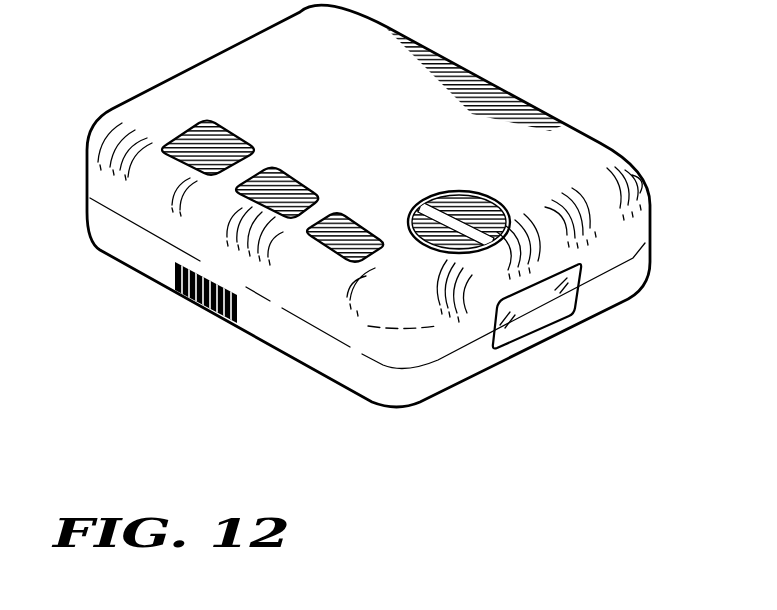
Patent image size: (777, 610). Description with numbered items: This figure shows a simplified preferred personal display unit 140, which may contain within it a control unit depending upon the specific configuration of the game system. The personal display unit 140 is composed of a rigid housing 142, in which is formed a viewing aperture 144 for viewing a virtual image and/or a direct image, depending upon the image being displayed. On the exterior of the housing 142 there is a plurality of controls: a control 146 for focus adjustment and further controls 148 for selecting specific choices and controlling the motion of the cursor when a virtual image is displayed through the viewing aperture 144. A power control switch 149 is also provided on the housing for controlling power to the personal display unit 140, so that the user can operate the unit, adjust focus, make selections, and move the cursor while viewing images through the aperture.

The personal display unit 140 is at (191, 421).
The rigid housing 142 is at (252, 55).
The viewing aperture 144 is at (543, 308).
The control 146 is at (477, 210).
The buttons 148 is at (223, 138).
The power control switch 149 is at (197, 305).